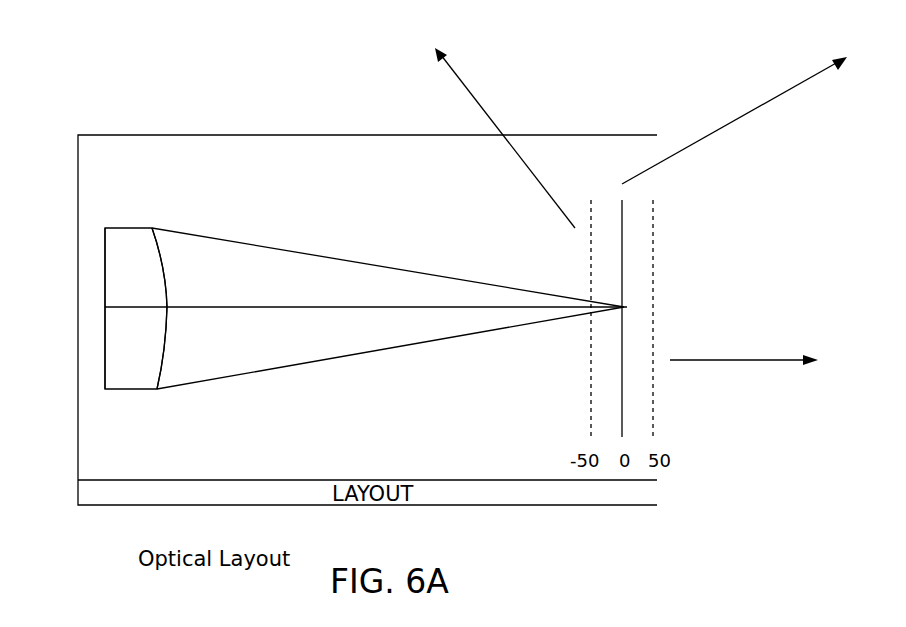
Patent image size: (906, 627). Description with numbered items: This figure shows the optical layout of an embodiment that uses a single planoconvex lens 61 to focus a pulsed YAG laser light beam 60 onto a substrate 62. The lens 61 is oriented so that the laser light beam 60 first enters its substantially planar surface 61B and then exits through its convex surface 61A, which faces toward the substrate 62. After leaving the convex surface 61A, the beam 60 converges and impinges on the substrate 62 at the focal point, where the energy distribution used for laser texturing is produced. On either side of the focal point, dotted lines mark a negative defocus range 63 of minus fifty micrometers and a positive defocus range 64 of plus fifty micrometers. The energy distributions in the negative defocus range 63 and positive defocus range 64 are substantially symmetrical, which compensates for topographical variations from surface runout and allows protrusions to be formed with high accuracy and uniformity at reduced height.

The pulsed YAG laser light beam 60 is at (413, 343).
The planoconvex lens 61 is at (137, 390).
The convex surface 61A is at (160, 257).
The substantially planar surface 61B is at (105, 349).
The substrate 62 is at (740, 109).
The negative defocus range 63 is at (492, 130).
The positive defocus range 64 is at (760, 362).